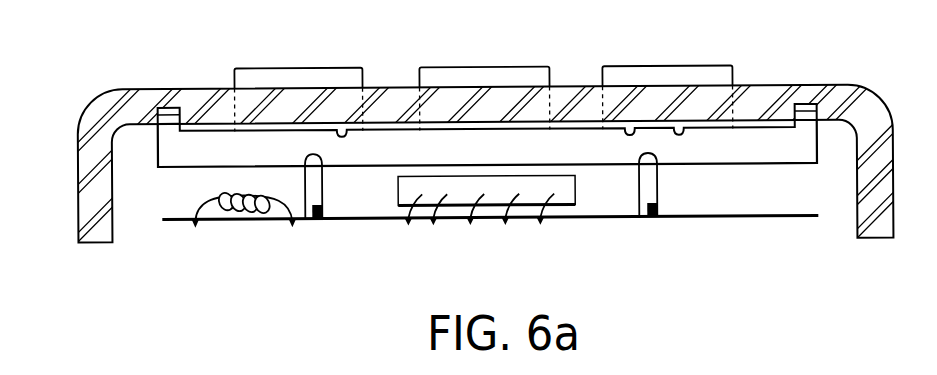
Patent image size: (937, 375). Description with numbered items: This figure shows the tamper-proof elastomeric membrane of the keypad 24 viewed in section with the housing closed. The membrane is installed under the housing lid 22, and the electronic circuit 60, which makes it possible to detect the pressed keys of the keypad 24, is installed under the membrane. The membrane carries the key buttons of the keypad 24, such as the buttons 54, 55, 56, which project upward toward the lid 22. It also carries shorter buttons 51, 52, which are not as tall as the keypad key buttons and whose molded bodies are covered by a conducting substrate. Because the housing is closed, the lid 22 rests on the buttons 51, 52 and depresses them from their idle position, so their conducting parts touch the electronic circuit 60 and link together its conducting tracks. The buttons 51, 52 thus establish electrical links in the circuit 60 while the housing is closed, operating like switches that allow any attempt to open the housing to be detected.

The housing lid 22 is at (101, 232).
The keypad 24 is at (758, 150).
The button 51 is at (307, 167).
The button 52 is at (637, 170).
The button 54 is at (318, 78).
The button 55 is at (500, 78).
The button 56 is at (688, 78).
The electronic circuit 60 is at (380, 221).